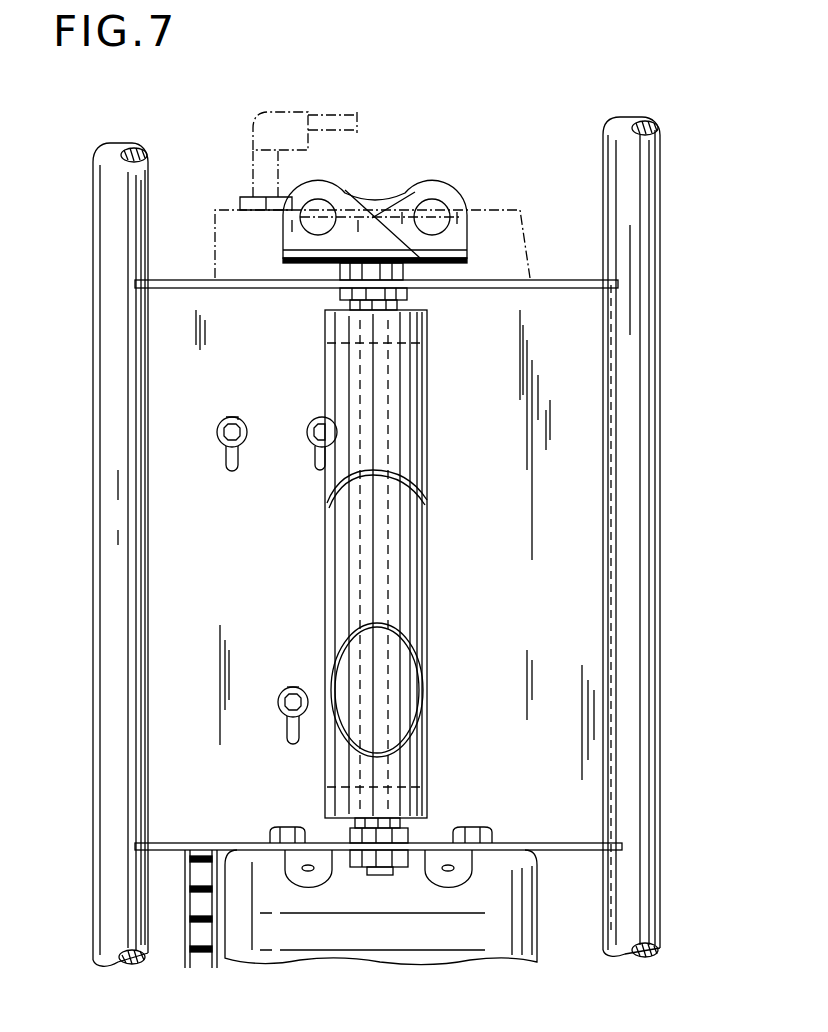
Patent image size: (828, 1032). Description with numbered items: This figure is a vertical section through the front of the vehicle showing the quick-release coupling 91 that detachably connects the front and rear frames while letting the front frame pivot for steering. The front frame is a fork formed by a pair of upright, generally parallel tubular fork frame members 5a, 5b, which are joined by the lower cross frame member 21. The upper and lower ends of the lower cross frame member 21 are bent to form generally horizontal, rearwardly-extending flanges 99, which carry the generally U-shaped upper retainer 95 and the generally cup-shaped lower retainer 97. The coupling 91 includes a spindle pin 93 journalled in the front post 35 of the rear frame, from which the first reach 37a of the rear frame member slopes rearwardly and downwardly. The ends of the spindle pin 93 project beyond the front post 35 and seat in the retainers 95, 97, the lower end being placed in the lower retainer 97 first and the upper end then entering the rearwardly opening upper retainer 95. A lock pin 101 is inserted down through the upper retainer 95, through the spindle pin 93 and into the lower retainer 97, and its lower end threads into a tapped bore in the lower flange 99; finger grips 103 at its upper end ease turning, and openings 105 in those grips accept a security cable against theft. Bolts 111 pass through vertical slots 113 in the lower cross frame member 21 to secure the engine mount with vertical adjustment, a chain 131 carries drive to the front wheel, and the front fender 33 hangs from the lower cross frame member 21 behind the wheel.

The fork frame member 5a is at (93, 470).
The fork frame member 5b is at (660, 467).
The lower cross frame member 21 is at (565, 643).
The front fender 33 is at (458, 953).
The front post 35 is at (425, 742).
The first reach 37a is at (400, 530).
The quick-release coupling 91 is at (353, 196).
The spindle pin 93 is at (344, 298).
The upper retainer 95 is at (405, 295).
The lower retainer 97 is at (410, 838).
The flanges 99 is at (183, 278).
The lock pin 101 is at (388, 410).
The finger grips 103 is at (283, 236).
The openings 105 is at (335, 212).
The bolts 111 is at (242, 423).
The vertical slots 113 is at (232, 460).
The chain 131 is at (182, 942).